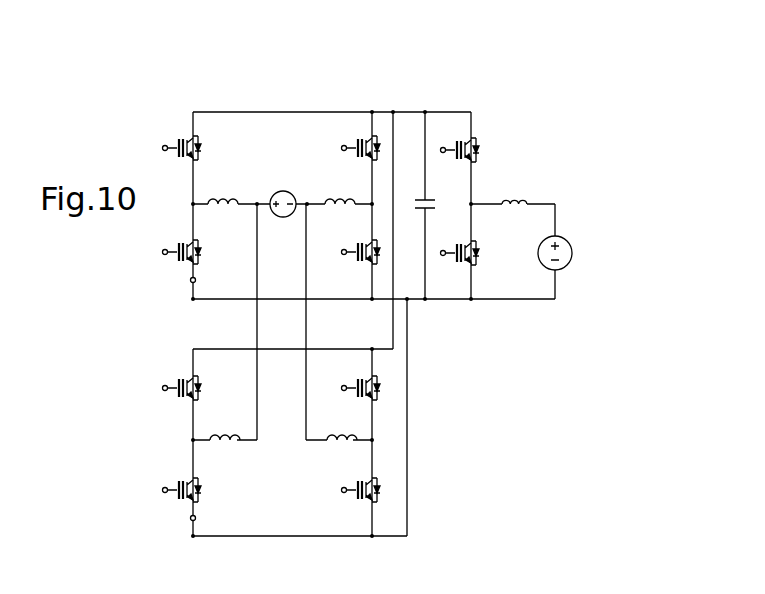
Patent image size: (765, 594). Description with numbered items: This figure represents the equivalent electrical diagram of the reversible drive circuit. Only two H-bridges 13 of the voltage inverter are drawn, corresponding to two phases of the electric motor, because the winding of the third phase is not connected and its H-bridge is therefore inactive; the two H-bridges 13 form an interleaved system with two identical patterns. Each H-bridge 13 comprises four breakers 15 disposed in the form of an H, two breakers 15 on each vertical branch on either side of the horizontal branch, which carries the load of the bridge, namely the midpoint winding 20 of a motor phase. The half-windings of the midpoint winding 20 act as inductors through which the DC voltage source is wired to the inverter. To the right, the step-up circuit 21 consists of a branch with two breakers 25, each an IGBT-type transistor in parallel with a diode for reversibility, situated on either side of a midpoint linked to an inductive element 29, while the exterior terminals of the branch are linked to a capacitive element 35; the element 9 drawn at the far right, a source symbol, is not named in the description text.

The H-bridge 13 is at (153, 101).
The breaker 15 is at (204, 140).
The midpoint winding 20 is at (344, 196).
The step-up circuit 21 is at (420, 101).
The breaker 25 is at (478, 140).
The inductive element 29 is at (531, 203).
The capacitive element 35 is at (422, 198).
The energy store / battery 9 is at (575, 254).